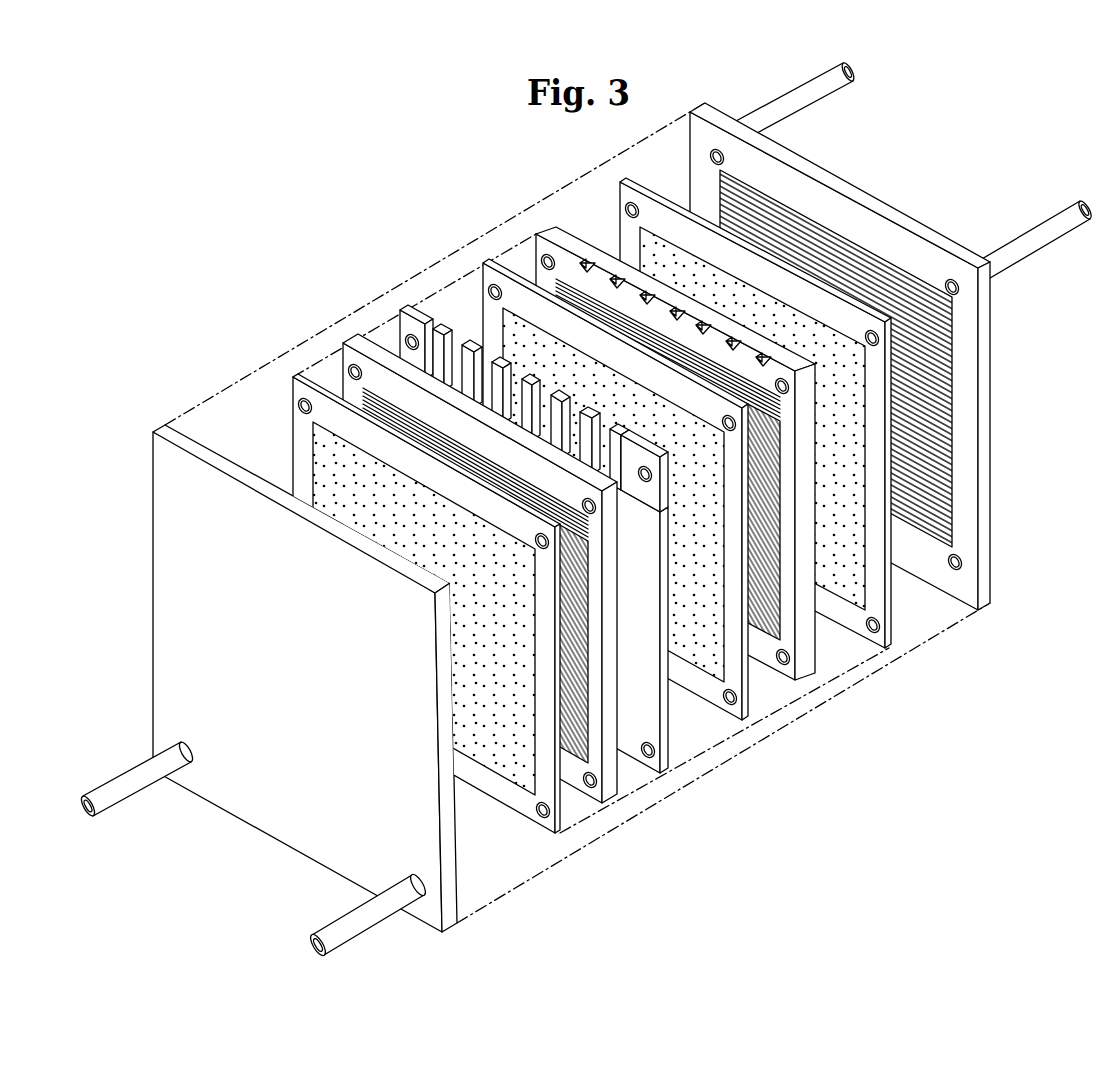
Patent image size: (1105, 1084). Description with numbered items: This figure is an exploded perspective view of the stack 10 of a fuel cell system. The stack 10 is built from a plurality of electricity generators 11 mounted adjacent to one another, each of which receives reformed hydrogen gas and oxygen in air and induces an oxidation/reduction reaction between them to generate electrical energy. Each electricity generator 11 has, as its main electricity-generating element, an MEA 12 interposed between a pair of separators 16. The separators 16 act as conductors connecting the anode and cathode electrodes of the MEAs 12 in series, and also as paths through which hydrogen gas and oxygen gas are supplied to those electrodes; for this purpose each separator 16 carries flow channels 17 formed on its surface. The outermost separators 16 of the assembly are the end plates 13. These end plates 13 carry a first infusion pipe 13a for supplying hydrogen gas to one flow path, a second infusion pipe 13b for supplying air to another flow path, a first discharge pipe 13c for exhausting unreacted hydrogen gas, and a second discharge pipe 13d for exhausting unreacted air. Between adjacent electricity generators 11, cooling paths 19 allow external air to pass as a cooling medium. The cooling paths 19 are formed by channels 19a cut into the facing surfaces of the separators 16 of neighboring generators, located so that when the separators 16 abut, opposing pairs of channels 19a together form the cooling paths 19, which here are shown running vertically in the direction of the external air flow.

The stack 10 is at (902, 117).
The electricity generator 11 is at (640, 475).
The MEA 12 is at (757, 703).
The end plate 13 is at (986, 338).
The first infusion pipe 13a is at (792, 94).
The second infusion pipe 13b is at (1038, 227).
The first discharge pipe 13c is at (326, 924).
The second discharge pipe 13d is at (117, 780).
The separator 16 is at (640, 465).
The flow channel 17 is at (780, 613).
The cooling path 19 is at (588, 238).
The channel 19a is at (440, 327).